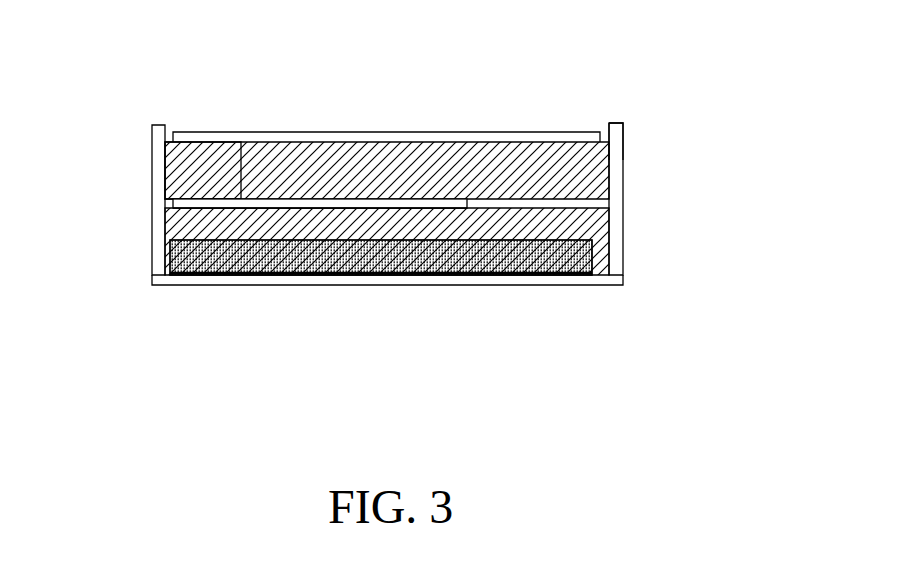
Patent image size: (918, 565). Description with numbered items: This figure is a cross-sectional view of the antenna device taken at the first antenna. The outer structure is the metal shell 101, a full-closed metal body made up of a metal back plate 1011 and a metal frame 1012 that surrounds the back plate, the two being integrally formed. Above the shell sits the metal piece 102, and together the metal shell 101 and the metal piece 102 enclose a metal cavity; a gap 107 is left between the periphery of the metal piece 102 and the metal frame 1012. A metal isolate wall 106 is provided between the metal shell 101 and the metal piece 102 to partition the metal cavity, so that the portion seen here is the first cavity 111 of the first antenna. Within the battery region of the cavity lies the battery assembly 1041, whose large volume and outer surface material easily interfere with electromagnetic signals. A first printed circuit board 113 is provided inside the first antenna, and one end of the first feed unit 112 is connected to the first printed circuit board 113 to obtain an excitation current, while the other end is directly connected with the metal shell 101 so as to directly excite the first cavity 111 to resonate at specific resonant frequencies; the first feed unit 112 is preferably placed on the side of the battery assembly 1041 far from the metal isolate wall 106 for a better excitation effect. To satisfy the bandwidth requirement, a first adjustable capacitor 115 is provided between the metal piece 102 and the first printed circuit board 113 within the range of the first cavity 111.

The metal shell 101 is at (442, 216).
The metal frame 1012 is at (621, 180).
The metal back plate 1011 is at (603, 240).
The battery assembly 1041 is at (445, 245).
The gap 107 is at (609, 125).
The first cavity 111 is at (427, 106).
The metal piece 102 is at (546, 132).
The metal isolate wall 106 is at (350, 113).
The first adjustable capacitor 115 is at (238, 170).
The first printed circuit board 113 is at (173, 203).
The first feed unit 112 is at (333, 210).